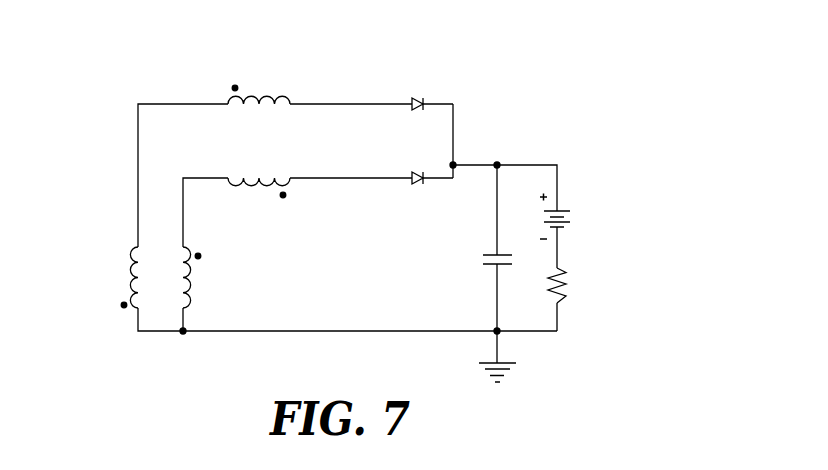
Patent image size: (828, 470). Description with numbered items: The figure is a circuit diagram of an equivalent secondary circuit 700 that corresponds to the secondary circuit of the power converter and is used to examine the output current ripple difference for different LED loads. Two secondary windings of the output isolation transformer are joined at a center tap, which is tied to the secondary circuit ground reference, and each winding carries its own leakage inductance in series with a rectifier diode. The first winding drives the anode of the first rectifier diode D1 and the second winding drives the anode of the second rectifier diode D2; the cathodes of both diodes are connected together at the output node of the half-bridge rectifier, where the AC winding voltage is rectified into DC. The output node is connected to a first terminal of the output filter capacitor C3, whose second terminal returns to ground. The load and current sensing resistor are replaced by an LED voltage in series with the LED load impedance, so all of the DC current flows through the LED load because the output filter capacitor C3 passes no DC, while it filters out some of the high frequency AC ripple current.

The equivalent secondary circuit 700 is at (376, 208).
The first rectifier diode D1 is at (418, 85).
The second rectifier diode D2 is at (418, 160).
The output filter capacitor C3 is at (482, 261).